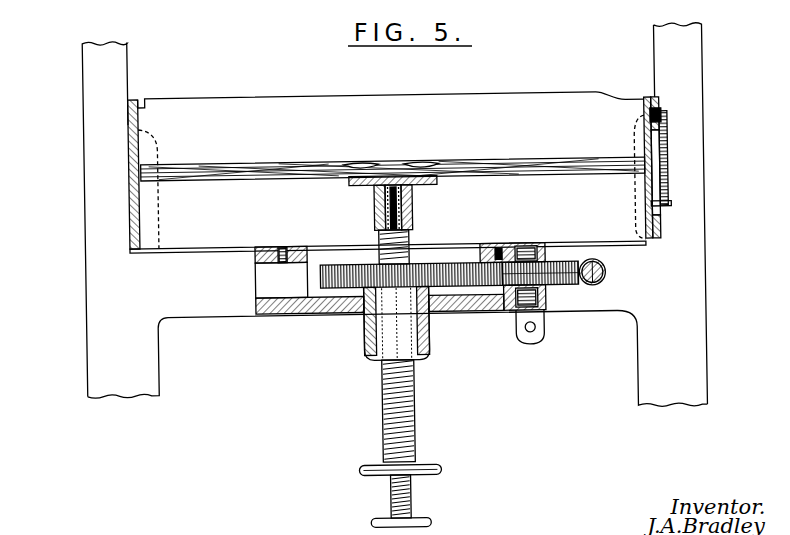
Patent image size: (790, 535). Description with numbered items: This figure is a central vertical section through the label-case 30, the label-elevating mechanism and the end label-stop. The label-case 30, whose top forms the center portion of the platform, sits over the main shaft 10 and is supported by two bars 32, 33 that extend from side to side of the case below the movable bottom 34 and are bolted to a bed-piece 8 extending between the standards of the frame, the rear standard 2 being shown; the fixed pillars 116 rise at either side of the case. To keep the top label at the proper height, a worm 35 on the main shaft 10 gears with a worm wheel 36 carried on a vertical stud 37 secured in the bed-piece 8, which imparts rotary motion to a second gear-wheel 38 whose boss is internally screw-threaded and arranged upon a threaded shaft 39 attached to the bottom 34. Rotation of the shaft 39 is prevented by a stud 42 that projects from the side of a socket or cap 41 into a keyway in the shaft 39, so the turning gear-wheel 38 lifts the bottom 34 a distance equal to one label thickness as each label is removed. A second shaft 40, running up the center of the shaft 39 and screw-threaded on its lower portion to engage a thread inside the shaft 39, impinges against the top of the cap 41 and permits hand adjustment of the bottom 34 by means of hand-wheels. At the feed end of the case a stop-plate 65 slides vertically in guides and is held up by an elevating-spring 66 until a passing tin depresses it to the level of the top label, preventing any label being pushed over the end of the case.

The rear standard 2 is at (397, 336).
The bed-piece 8 is at (439, 331).
The main shaft 10 is at (594, 279).
The label-case 30 is at (394, 172).
The bar 32 is at (281, 244).
The bar 33 is at (505, 247).
The movable bottom 34 is at (501, 165).
The worm 35 is at (606, 273).
The worm wheel 36 is at (549, 264).
The vertical stud 37 is at (501, 317).
The second gear-wheel 38 is at (433, 265).
The threaded shaft 39 is at (409, 432).
The second shaft 40 is at (410, 197).
The socket or cap 41 is at (409, 216).
The stud 42 is at (392, 200).
The stop-plate 65 is at (652, 122).
The elevating-spring 66 is at (667, 194).
The fixed pillar 116 is at (394, 218).